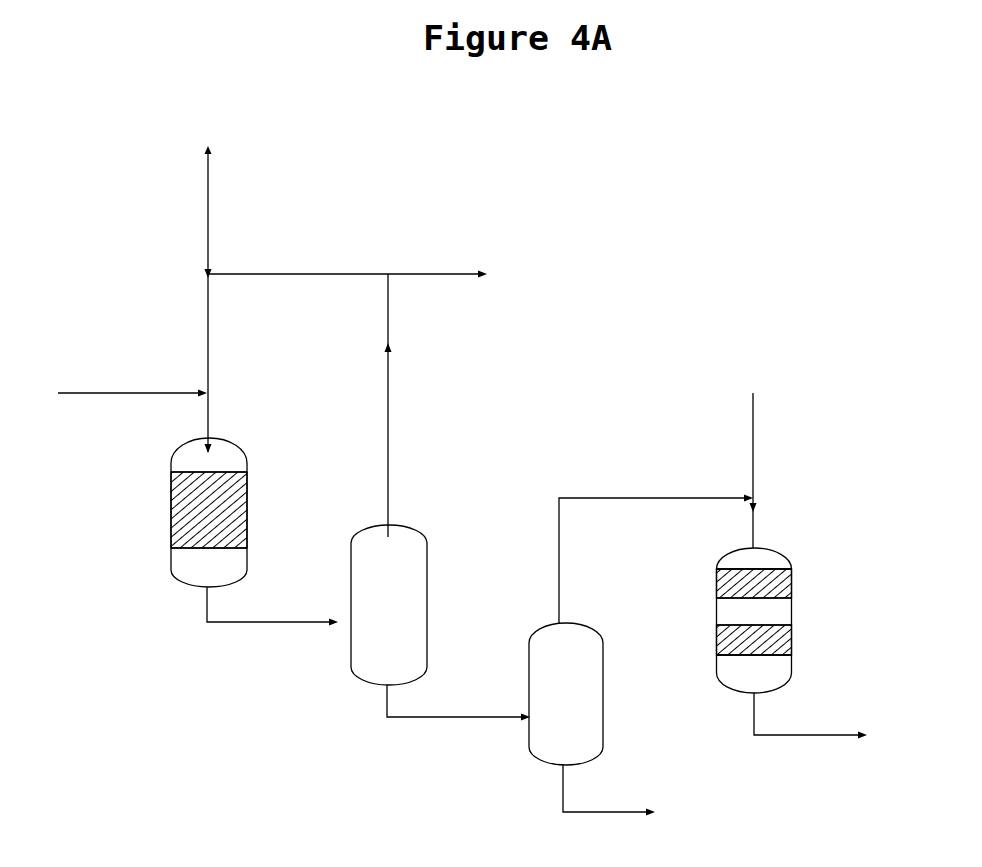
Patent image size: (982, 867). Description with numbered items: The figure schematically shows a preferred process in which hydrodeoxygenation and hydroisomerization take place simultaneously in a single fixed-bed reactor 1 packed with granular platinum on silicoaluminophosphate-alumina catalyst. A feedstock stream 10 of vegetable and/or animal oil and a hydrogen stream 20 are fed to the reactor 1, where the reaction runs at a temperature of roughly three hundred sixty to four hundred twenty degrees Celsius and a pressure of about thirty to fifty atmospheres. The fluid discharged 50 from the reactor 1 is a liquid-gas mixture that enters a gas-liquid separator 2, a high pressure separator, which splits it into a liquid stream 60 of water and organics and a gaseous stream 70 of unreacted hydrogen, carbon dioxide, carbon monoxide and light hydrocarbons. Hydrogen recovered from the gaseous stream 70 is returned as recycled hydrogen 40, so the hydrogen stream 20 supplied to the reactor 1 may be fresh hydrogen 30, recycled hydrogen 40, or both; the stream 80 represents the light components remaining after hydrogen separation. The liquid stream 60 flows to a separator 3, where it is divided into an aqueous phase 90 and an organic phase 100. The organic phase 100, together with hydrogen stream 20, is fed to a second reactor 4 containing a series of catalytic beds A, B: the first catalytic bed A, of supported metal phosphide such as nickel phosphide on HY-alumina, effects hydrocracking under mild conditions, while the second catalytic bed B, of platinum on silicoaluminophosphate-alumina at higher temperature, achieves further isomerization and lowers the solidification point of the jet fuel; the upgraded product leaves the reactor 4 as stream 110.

The fixed-bed reactor 1 is at (209, 512).
The gas-liquid separator 2 is at (389, 605).
The separator 3 is at (566, 694).
The second reactor 4 is at (754, 620).
The first catalytic bed A is at (766, 583).
The second catalytic bed B is at (765, 643).
The feedstock stream 10 is at (132, 375).
The hydrogen stream 20 is at (452, 408).
The fresh hydrogen 30 is at (182, 210).
The recycled hydrogen 40 is at (298, 255).
The fluid discharged from the reactor 50 is at (272, 605).
The liquid stream 60 is at (458, 698).
The gaseous stream 70 is at (368, 405).
The light components stream 80 is at (437, 257).
The aqueous phase 90 is at (609, 790).
The organic phase 100 is at (656, 546).
The fourth reactor product stream 110 is at (810, 713).